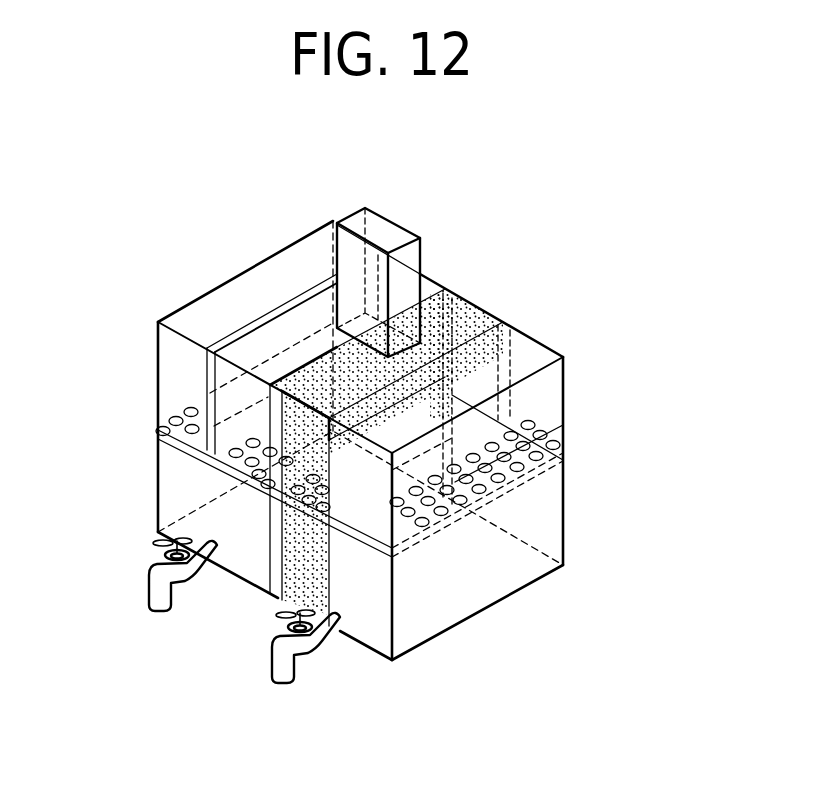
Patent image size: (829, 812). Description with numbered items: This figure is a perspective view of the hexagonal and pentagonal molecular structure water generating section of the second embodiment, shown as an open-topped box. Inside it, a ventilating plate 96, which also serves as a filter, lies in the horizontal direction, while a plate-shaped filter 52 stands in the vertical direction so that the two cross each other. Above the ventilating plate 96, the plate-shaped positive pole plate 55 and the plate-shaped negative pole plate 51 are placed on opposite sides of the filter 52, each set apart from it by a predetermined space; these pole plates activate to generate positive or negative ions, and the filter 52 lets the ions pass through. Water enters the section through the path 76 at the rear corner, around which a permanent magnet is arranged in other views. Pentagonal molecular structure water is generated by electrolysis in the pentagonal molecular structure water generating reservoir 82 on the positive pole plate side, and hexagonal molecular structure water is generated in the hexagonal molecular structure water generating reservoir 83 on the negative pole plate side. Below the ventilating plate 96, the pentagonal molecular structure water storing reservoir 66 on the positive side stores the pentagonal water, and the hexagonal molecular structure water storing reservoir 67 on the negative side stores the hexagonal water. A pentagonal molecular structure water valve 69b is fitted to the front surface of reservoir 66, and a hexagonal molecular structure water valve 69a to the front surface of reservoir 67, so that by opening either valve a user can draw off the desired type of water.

The negative pole plate 51 is at (497, 322).
The plate-shaped filter 52 is at (437, 283).
The positive pole plate 55 is at (237, 334).
The pentagonal molecular structure water storing reservoir 66 is at (170, 492).
The hexagonal molecular structure water storing reservoir 67 is at (560, 497).
The hexagonal molecular structure water valve 69a is at (283, 646).
The pentagonal molecular structure water valve 69b is at (157, 577).
The path 76 is at (363, 238).
The pentagonal molecular structure water generating reservoir 82 is at (170, 386).
The hexagonal molecular structure water generating reservoir 83 is at (560, 412).
The ventilating plate 96 is at (562, 460).